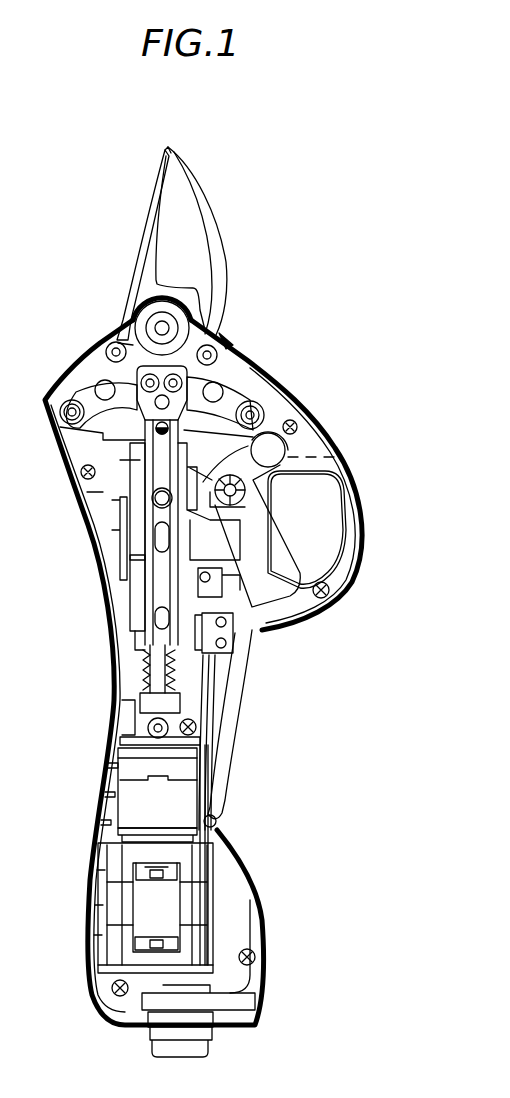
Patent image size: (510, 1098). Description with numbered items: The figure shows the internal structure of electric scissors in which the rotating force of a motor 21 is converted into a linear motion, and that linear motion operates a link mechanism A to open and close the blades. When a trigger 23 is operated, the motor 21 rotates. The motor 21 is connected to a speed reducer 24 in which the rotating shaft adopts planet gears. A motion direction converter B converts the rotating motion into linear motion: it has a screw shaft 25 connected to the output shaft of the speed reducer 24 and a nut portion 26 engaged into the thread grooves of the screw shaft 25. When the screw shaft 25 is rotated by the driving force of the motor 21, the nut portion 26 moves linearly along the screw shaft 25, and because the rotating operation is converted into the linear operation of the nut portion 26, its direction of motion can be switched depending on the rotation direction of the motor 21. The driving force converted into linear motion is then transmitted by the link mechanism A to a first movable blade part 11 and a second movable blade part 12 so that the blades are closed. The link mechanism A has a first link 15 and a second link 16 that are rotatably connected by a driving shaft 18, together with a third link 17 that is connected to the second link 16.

The first movable blade part 11 is at (140, 245).
The second movable blade part 12 is at (218, 221).
The first link 15 is at (65, 450).
The second link 16 is at (212, 418).
The third link 17 is at (242, 437).
The driving shaft 18 is at (133, 397).
The motor 21 is at (172, 903).
The trigger 23 is at (270, 540).
The speed reducer 24 is at (218, 813).
The screw shaft 25 is at (180, 667).
The nut portion 26 is at (135, 600).
The link mechanism A is at (102, 457).
The motion direction converter B is at (129, 667).